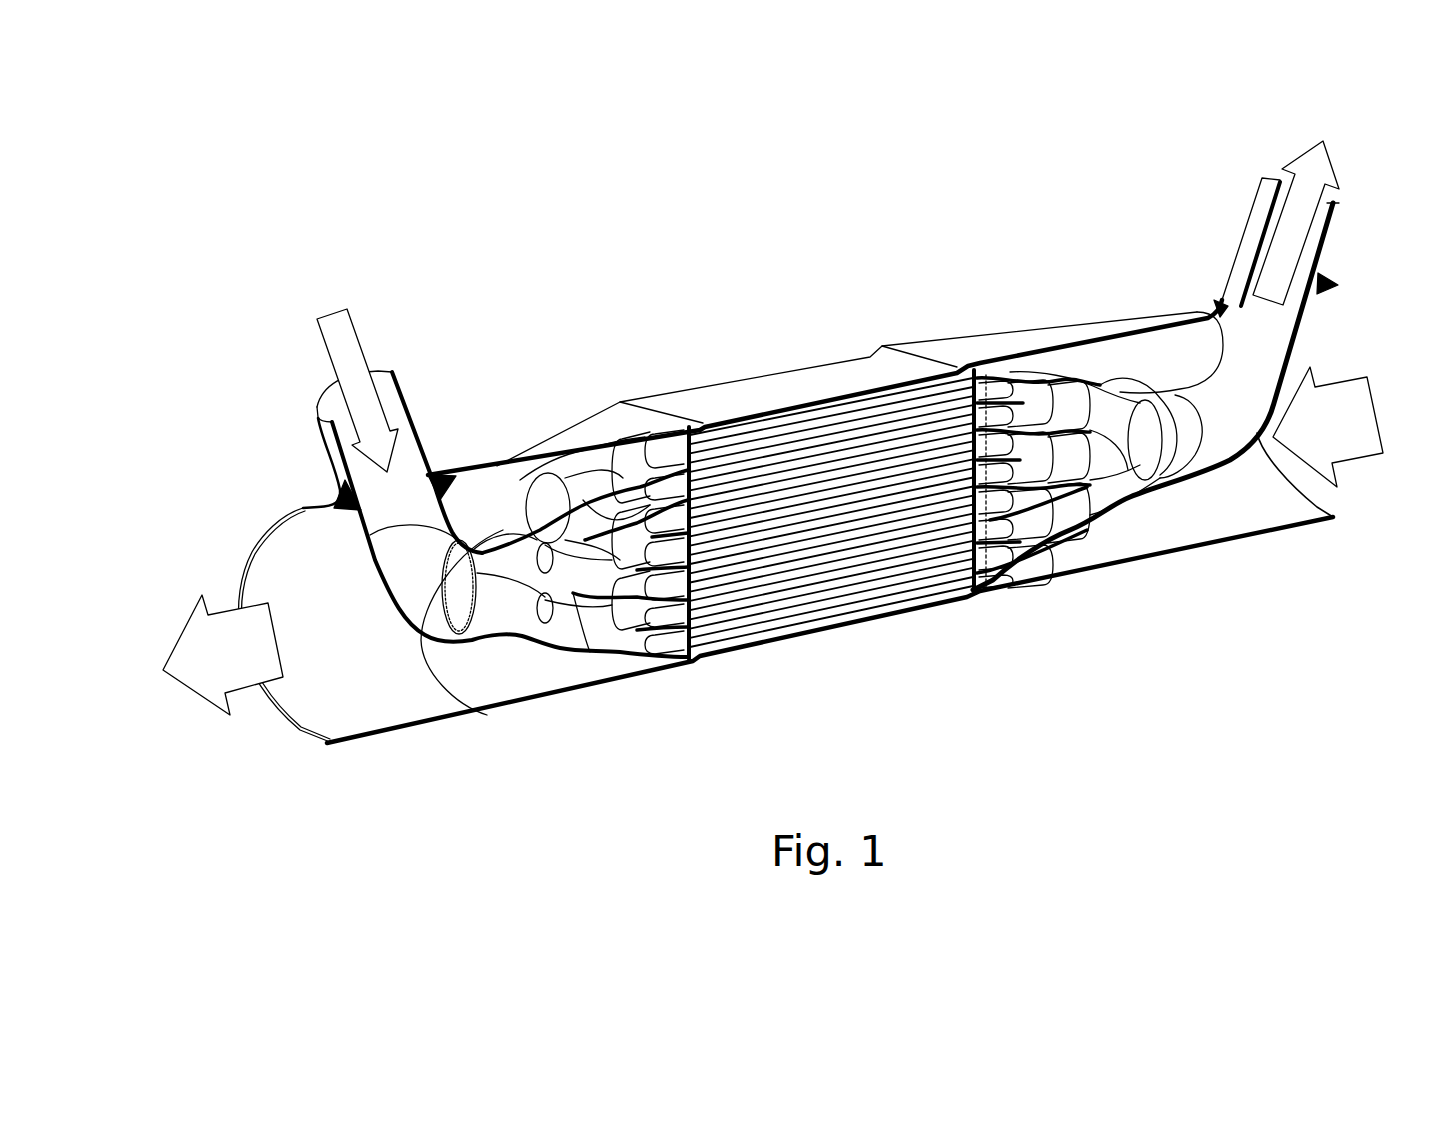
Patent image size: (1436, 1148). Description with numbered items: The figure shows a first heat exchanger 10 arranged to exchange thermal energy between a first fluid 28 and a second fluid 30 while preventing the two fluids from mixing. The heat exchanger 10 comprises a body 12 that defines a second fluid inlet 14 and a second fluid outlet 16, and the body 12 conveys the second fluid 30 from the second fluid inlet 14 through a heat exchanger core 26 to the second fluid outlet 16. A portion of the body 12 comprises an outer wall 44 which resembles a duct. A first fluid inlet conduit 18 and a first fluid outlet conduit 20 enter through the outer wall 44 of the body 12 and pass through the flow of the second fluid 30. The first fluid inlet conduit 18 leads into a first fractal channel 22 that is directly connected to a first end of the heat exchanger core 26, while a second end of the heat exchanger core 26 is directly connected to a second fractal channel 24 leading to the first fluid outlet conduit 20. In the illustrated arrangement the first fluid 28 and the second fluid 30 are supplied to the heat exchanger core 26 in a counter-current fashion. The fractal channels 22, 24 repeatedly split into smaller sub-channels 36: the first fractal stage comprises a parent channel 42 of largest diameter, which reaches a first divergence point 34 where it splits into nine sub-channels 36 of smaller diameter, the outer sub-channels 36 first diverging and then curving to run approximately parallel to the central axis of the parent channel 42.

The heat exchanger 10 is at (272, 318).
The body 12 is at (1127, 572).
The second fluid inlet 14 is at (1317, 507).
The second fluid outlet 16 is at (303, 740).
The first fluid inlet conduit 18 is at (317, 407).
The first fluid outlet conduit 20 is at (1327, 207).
The first fractal channel 22 is at (421, 645).
The second fractal channel 24 is at (1113, 407).
The heat exchanger core 26 is at (862, 597).
The first fluid 28 is at (343, 333).
The second fluid 30 is at (1363, 373).
The first divergence point 34 is at (572, 625).
The sub-channels 36 is at (578, 521).
The parent channel 42 is at (480, 590).
The outer wall 44 is at (613, 680).